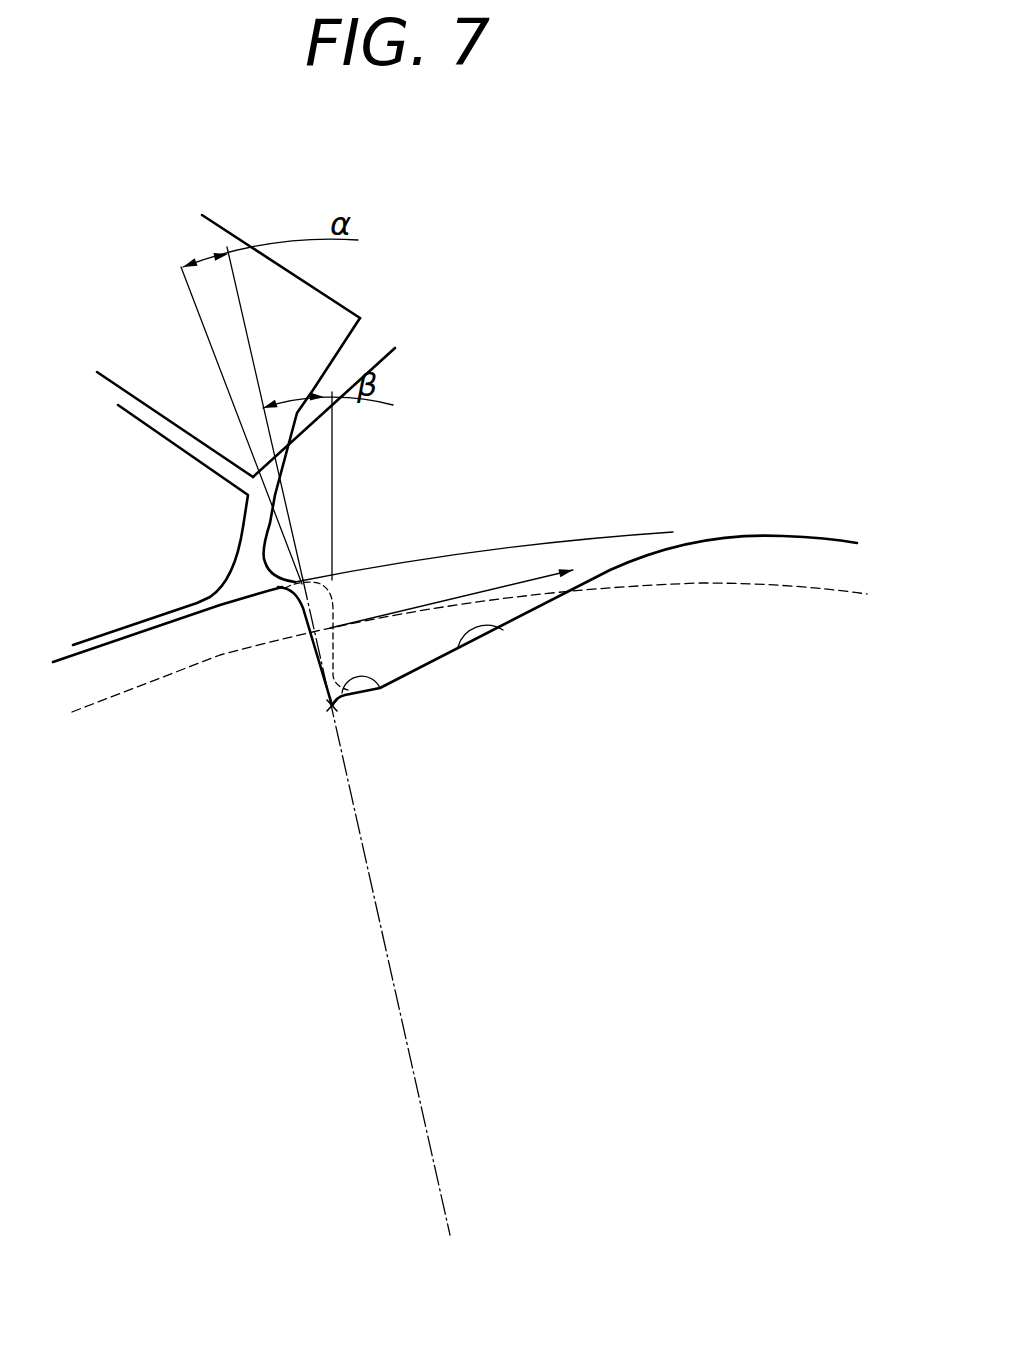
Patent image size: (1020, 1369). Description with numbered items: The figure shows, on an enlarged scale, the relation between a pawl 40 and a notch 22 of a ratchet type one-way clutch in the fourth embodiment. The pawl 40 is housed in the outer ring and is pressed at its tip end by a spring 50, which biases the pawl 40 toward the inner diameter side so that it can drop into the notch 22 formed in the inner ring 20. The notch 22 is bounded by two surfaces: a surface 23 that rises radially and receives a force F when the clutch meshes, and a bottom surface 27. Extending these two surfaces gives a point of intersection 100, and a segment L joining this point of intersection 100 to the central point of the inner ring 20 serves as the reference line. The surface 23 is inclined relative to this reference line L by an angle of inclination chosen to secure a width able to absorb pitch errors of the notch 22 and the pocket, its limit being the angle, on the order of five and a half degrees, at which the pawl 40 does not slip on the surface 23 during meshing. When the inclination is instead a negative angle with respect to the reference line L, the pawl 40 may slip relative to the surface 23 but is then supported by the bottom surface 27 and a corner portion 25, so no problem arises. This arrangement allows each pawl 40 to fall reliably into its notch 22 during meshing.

The inner ring 20 is at (460, 670).
The notch 22 is at (418, 648).
The surface 23 is at (318, 640).
The corner portion 25 is at (380, 694).
The bottom surface 27 is at (498, 630).
The pawl 40 is at (388, 363).
The spring 50 is at (128, 377).
The point of intersection 100 is at (328, 708).
The segment L is at (365, 866).
The force F is at (452, 584).